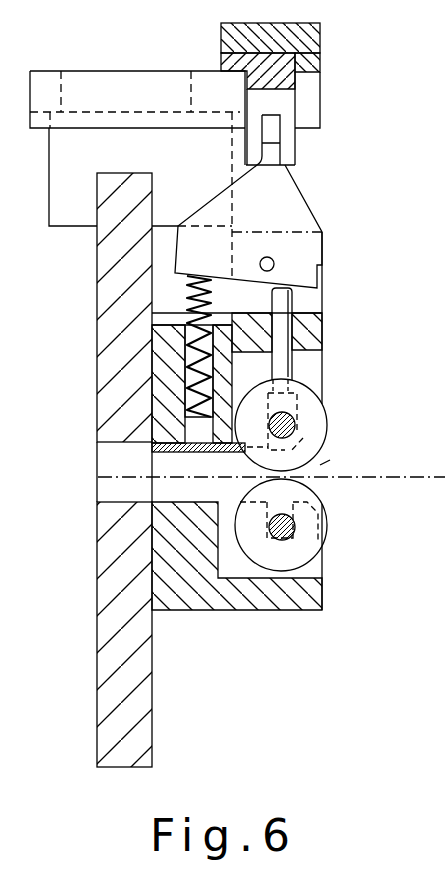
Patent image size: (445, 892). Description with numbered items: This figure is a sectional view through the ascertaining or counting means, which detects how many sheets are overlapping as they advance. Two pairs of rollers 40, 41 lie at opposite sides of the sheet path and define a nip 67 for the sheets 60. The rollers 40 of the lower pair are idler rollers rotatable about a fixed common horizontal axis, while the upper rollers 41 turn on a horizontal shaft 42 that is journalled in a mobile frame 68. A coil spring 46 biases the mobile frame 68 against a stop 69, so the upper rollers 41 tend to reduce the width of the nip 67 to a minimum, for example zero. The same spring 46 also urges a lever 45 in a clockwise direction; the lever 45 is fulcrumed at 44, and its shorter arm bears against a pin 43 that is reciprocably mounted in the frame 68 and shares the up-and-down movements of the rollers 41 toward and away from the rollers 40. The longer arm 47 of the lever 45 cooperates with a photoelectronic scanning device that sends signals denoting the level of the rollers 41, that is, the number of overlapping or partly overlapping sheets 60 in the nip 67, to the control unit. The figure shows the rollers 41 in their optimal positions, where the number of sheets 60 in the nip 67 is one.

The roller 40 is at (308, 550).
The roller 41 is at (325, 430).
The shaft 42 is at (297, 423).
The pin 43 is at (292, 368).
The fulcrum 44 is at (275, 262).
The lever 45 is at (275, 196).
The coil spring 46 is at (192, 300).
The longer arm 47 is at (275, 133).
The sheet 60 is at (325, 478).
The nip 67 is at (320, 465).
The mobile frame 68 is at (313, 333).
The stop 69 is at (160, 447).